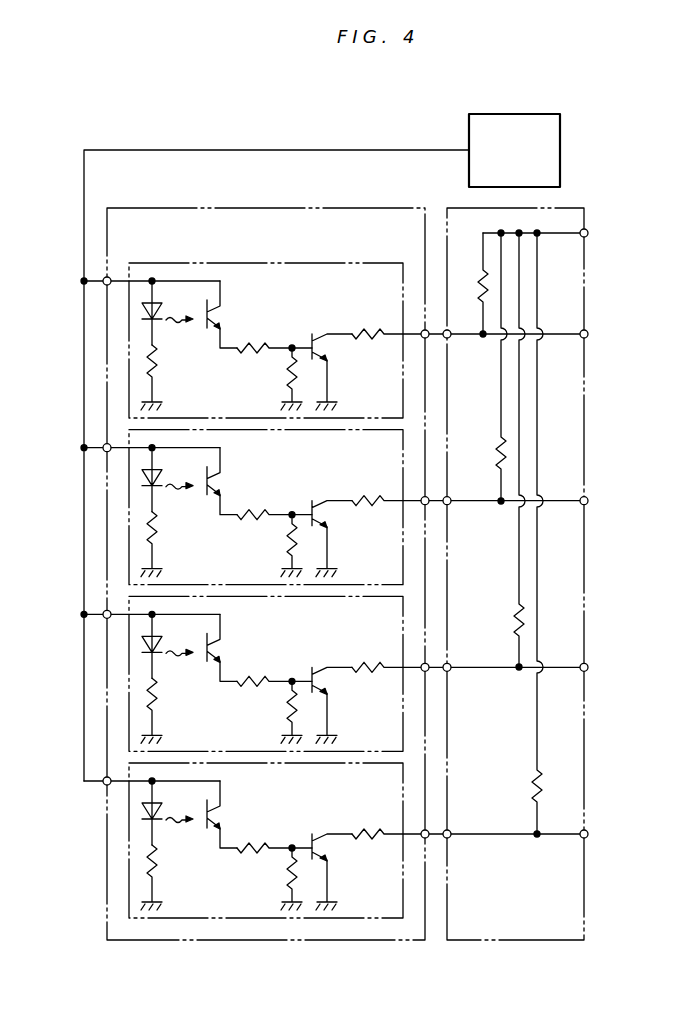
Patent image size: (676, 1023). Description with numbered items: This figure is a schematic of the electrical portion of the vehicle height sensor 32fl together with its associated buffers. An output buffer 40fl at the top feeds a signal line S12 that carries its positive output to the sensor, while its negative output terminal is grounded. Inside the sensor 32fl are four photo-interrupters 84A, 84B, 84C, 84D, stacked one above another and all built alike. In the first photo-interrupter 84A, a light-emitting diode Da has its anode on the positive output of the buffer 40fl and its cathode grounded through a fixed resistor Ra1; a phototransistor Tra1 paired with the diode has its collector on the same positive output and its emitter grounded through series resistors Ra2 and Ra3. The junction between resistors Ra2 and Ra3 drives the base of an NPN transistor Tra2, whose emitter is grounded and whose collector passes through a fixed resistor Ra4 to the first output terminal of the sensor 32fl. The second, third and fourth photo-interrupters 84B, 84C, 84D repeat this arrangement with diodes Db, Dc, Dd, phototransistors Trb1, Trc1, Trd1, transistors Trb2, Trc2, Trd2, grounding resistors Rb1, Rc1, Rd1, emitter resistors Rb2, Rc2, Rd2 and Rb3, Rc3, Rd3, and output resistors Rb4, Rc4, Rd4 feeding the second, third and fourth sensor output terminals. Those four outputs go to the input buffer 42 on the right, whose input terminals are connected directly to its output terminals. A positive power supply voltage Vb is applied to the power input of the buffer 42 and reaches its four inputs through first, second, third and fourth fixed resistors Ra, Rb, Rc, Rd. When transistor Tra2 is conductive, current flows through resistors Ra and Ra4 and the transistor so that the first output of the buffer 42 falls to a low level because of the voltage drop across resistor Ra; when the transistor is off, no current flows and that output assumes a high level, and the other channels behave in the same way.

The output buffer 40fl is at (562, 125).
The vehicle height sensor 32fl is at (108, 900).
The input buffer 42 is at (588, 903).
The signal line S12 is at (275, 453).
The positive power supply voltage Vb is at (549, 234).
The photo-interrupter 84A is at (130, 347).
The photo-interrupter 84B is at (213, 507).
The photo-interrupter 84C is at (213, 673).
The photo-interrupter 84D is at (213, 840).
The light-emitting diode Da is at (165, 323).
The light-emitting diode Db is at (170, 488).
The light-emitting diode Dc is at (170, 654).
The light-emitting diode Dd is at (170, 821).
The fixed resistor Ra1 is at (162, 364).
The fixed resistor Rb1 is at (174, 544).
The fixed resistor Rc1 is at (174, 710).
The fixed resistor Rd1 is at (174, 877).
The fixed resistor Ra2 is at (251, 354).
The fixed resistor Rb2 is at (268, 531).
The fixed resistor Rc2 is at (268, 697).
The fixed resistor Rd2 is at (268, 864).
The fixed resistor Ra3 is at (287, 375).
The fixed resistor Rb3 is at (260, 547).
The fixed resistor Rc3 is at (260, 713).
The fixed resistor Rd3 is at (260, 880).
The fixed resistor Ra4 is at (466, 322).
The fixed resistor Rb4 is at (466, 489).
The fixed resistor Rc4 is at (466, 655).
The fixed resistor Rd4 is at (466, 822).
The phototransistor Tra1 is at (212, 312).
The phototransistor Trb1 is at (243, 481).
The phototransistor Trc1 is at (242, 647).
The phototransistor Trd1 is at (242, 814).
The NPN transistor Tra2 is at (320, 354).
The NPN transistor Trb2 is at (347, 539).
The NPN transistor Trc2 is at (346, 705).
The NPN transistor Trd2 is at (347, 872).
The first fixed resistor Ra is at (469, 285).
The second fixed resistor Rb is at (484, 368).
The third fixed resistor Rc is at (506, 451).
The fourth fixed resistor Rd is at (520, 535).